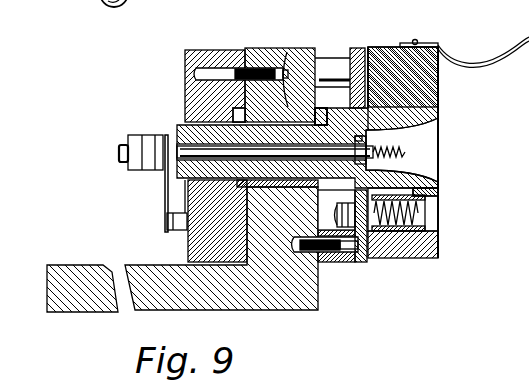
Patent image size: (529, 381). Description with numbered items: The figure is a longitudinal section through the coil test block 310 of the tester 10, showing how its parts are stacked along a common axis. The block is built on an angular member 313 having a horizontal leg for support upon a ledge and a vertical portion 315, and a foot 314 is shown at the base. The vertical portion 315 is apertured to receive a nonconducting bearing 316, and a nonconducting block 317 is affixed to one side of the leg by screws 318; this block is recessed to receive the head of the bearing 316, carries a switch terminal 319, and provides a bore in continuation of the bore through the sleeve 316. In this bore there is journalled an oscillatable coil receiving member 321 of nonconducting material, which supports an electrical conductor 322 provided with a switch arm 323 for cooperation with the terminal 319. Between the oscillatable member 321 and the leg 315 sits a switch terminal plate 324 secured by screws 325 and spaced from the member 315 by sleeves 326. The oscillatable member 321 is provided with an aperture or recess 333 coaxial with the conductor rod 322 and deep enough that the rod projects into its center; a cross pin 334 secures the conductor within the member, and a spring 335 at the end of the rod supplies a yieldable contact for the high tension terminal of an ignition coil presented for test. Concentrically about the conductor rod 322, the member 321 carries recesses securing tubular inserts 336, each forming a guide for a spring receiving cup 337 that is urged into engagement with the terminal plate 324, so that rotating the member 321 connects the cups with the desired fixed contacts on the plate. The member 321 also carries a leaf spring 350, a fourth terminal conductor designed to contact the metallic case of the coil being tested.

The assembly direction indicator 10 is at (462, 147).
The clutch assembly 310 is at (169, 110).
The angular member 313 is at (318, 310).
The side block 314 is at (138, 268).
The vertical portion 315 is at (302, 56).
The nonconducting bearing 316 is at (287, 52).
The nonconducting block 317 is at (217, 56).
The screws 318 is at (196, 73).
The switch terminal 319 is at (180, 232).
The oscillatable coil receiving member 321 is at (392, 50).
The electrical conductor 322 is at (121, 152).
The switch arm 323 is at (165, 186).
The switch terminal plate 324 is at (358, 47).
The screws 325 is at (354, 262).
The sleeves 326 is at (338, 260).
The aperture or recess 333 is at (432, 127).
The cross pin 334 is at (380, 133).
The spring 335 is at (395, 153).
The tubular inserts 336 is at (440, 193).
The spring receiving cup 337 is at (405, 240).
The leaf spring 350 is at (470, 60).